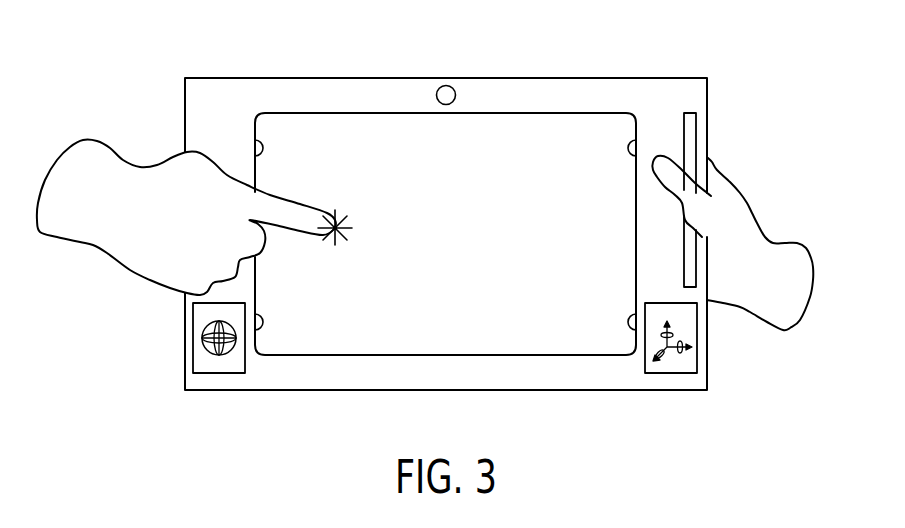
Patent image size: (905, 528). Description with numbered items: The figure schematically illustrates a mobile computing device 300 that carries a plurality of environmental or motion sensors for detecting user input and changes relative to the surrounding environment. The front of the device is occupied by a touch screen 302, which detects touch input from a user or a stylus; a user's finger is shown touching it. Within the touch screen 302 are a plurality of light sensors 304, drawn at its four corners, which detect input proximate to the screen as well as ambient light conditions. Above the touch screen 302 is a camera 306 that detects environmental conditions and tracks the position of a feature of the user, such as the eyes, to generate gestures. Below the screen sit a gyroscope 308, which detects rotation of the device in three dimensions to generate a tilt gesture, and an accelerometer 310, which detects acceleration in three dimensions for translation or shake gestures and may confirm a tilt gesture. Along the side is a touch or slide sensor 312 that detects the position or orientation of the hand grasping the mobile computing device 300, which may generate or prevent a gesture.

The mobile computing device 300 is at (683, 47).
The touch screen 302 is at (443, 355).
The light sensors 304 is at (264, 148).
The camera 306 is at (446, 85).
The gyroscope 308 is at (193, 338).
The accelerometer 310 is at (697, 337).
The touch or slide sensor 312 is at (697, 138).